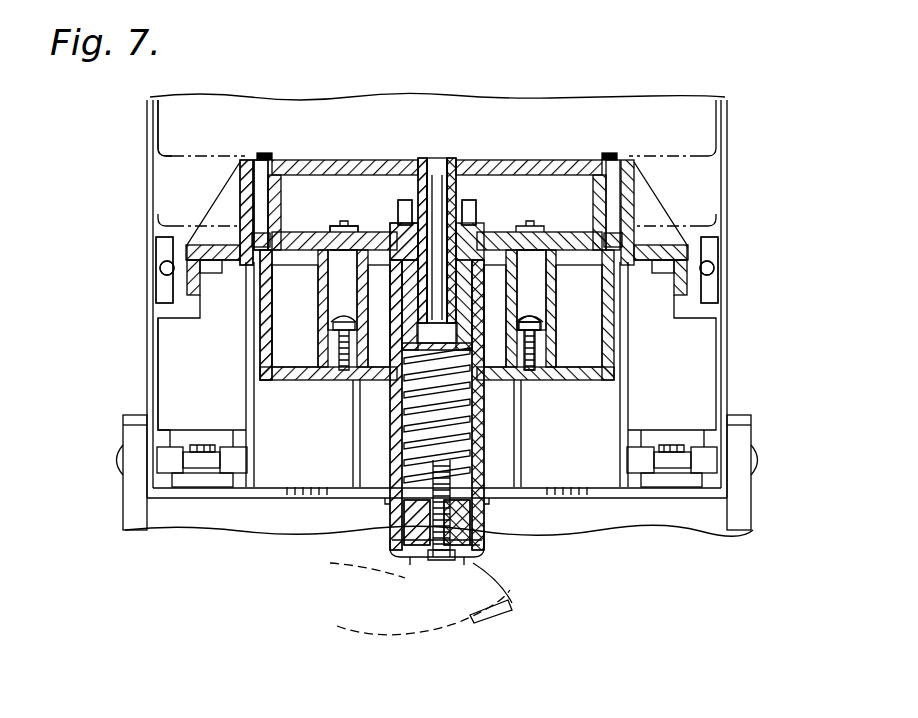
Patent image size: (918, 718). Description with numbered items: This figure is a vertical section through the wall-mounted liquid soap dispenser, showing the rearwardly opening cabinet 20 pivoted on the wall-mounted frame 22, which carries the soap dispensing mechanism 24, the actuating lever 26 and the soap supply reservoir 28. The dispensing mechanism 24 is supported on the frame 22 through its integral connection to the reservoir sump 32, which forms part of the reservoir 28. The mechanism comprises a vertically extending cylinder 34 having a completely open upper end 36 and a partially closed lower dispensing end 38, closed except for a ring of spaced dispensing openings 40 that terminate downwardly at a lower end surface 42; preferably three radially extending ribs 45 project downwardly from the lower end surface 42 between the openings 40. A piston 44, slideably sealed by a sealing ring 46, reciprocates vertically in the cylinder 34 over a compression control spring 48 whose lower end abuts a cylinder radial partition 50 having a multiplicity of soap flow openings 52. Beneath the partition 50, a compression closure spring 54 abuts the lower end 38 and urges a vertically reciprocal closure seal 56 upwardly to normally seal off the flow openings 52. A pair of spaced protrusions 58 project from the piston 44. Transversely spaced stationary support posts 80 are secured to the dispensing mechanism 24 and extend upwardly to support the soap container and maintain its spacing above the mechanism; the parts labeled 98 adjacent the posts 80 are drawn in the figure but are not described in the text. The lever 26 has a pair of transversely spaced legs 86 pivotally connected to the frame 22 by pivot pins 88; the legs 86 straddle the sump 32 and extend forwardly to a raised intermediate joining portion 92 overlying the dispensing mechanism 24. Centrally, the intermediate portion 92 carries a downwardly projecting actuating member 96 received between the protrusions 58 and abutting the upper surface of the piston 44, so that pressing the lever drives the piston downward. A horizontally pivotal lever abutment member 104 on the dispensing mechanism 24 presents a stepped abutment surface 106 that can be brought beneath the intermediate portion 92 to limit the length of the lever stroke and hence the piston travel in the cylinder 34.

The cabinet 20 is at (124, 502).
The wall-mounted frame 22 is at (146, 362).
The soap dispensing mechanism 24 is at (388, 440).
The actuating lever 26 is at (318, 158).
The soap supply reservoir 28 is at (250, 362).
The reservoir sump 32 is at (283, 358).
The cylinder 34 is at (486, 452).
The open upper end 36 is at (398, 230).
The lower dispensing end 38 is at (396, 548).
The dispensing openings 40 is at (420, 558).
The lower end surface 42 is at (466, 556).
The piston 44 is at (537, 345).
The ribs 45 is at (440, 562).
The sealing ring 46 is at (532, 284).
The compression control spring 48 is at (395, 410).
The cylinder radial partition 50 is at (484, 502).
The soap flow openings 52 is at (400, 502).
The compression closure spring 54 is at (481, 546).
The closure seal 56 is at (490, 535).
The protrusions 58 is at (422, 172).
The support posts 80 is at (262, 153).
The lever legs 86 is at (205, 270).
The pivot pins 88 is at (160, 268).
The intermediate joining portion 92 is at (388, 162).
The actuating member 96 is at (437, 158).
The bracket 98 is at (262, 165).
The lever abutment member 104 is at (336, 228).
The stepped abutment surface 106 is at (400, 207).